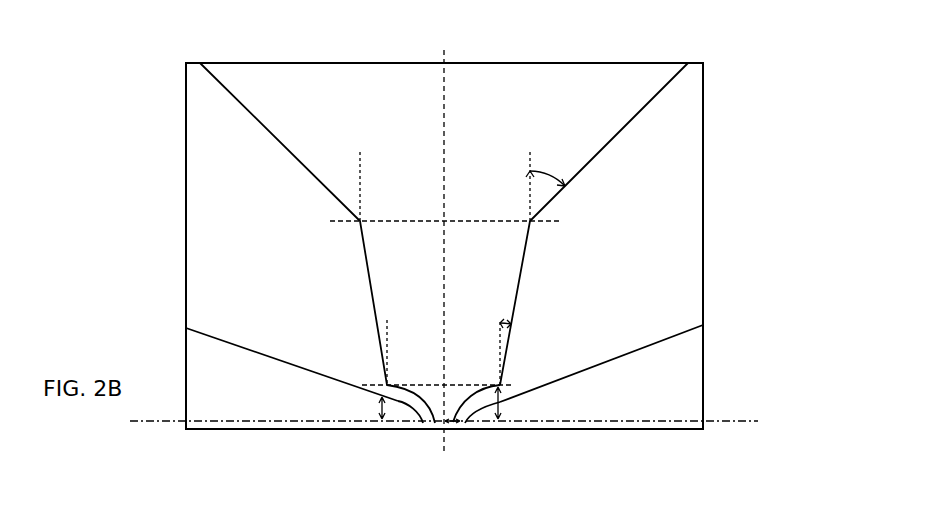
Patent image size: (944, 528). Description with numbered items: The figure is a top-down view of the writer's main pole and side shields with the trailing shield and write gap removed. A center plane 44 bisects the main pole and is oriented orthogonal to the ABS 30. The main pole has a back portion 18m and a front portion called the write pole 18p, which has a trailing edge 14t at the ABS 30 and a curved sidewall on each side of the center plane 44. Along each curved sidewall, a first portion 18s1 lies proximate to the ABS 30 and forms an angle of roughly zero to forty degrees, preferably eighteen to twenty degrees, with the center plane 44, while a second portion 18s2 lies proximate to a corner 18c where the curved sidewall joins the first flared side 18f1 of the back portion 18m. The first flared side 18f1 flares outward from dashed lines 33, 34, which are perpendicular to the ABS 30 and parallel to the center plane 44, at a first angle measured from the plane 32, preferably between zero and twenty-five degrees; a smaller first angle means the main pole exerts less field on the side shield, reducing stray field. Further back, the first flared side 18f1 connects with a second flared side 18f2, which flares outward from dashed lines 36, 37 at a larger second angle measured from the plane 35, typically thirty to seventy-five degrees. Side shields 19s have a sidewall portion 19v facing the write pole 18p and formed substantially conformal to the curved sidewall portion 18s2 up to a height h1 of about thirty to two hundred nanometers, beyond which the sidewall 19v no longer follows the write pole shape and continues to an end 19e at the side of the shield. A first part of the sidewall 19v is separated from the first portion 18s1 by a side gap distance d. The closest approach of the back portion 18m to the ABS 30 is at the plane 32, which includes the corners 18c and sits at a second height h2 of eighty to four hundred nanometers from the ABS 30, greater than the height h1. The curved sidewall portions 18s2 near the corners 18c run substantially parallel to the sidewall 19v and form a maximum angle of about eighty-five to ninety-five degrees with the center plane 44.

The main pole back portion 18m is at (577, 84).
The second flared side 18f2 is at (276, 137).
The first flared side 18f1 is at (370, 283).
The corner 18c is at (385, 383).
The second portion of curved sidewall 18s2 is at (398, 402).
The first portion of curved sidewall 18s1 is at (437, 423).
The trailing edge 14t is at (457, 393).
The write pole 18p is at (488, 421).
The end 19e is at (708, 323).
The side shields 19s is at (690, 378).
The sidewall portion 19v is at (580, 370).
The ABS 30 is at (446, 422).
The center plane 44 is at (445, 251).
The plane 35 is at (444, 223).
The dashed line 36 is at (364, 175).
The dashed line 37 is at (532, 175).
The dashed line 33 is at (392, 341).
The dashed line 34 is at (502, 342).
The plane 32 is at (441, 378).
The height h1 is at (369, 409).
The second height h2 is at (515, 404).
The side gap distance d is at (455, 425).